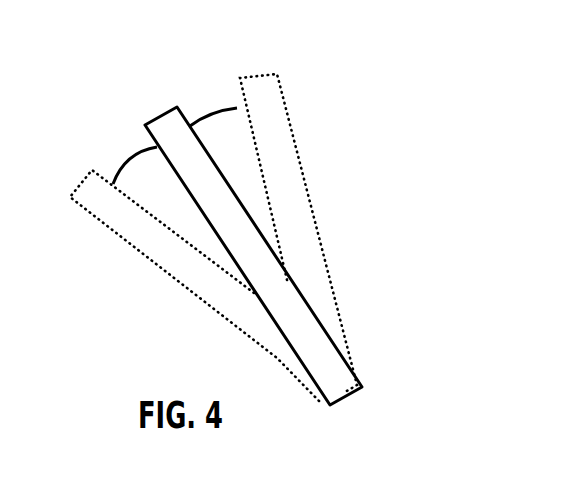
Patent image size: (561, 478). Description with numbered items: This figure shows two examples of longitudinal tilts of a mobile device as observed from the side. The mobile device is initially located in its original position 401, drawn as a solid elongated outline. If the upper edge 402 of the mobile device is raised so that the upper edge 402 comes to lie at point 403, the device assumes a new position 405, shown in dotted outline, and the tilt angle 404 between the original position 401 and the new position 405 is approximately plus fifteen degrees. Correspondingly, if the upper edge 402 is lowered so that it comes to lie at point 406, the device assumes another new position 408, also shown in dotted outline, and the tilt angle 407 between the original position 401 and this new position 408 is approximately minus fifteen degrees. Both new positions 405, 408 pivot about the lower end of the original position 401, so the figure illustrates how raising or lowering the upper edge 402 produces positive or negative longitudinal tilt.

The original position 401 is at (333, 382).
The upper edge 402 is at (177, 107).
The point 403 is at (276, 73).
The tilt angle 404 is at (237, 108).
The new position 405 is at (290, 219).
The point 406 is at (93, 169).
The tilt angle 407 is at (140, 152).
The new position 408 is at (197, 276).